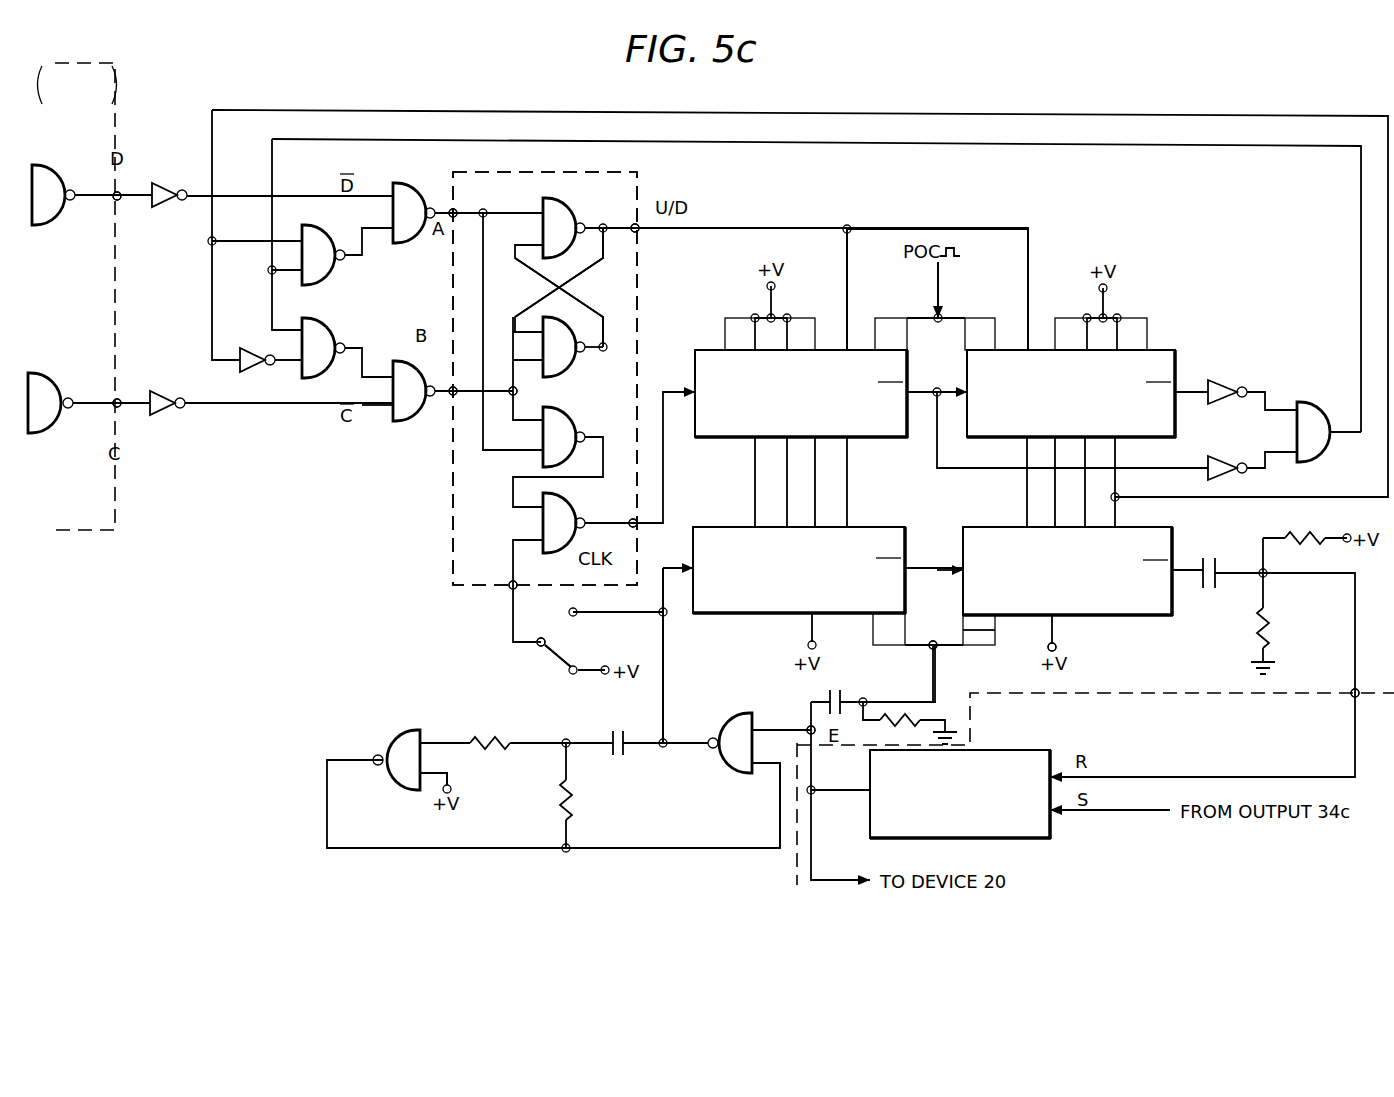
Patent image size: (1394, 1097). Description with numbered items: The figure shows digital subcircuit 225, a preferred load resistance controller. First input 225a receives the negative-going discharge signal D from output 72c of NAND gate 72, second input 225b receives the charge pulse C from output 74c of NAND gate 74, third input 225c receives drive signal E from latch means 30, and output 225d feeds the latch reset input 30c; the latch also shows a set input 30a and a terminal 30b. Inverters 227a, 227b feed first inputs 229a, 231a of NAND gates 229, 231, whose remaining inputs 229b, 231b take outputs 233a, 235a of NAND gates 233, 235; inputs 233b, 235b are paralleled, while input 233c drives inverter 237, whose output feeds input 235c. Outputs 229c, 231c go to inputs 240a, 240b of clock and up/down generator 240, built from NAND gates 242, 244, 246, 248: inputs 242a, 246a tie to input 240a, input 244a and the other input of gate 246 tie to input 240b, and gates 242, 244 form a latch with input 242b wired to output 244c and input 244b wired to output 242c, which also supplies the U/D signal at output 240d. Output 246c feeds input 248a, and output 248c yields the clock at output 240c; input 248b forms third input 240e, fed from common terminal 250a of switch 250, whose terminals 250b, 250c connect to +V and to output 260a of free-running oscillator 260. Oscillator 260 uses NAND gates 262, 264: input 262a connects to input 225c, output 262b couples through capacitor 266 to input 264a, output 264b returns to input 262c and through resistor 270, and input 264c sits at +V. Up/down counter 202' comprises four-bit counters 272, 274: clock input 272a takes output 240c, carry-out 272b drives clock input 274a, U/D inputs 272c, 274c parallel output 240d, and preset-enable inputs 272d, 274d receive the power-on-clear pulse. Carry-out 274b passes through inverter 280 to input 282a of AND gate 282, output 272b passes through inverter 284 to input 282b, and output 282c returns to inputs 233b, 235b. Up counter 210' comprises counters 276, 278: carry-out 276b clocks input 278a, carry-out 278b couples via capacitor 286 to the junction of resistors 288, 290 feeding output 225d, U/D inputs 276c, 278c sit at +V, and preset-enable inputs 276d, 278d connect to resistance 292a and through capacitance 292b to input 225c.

The NAND gate 72 is at (60, 175).
The output of NAND gate 72c is at (76, 205).
The NAND gate 74 is at (56, 375).
The output of NAND gate 74c is at (74, 415).
The digital subcircuit 225 is at (233, 553).
The first input 225a is at (120, 202).
The second input 225b is at (120, 415).
The third subcircuit input 225c is at (808, 726).
The subcircuit output 225d is at (1350, 690).
The first inverter means 227a is at (162, 180).
The second inverter means 227b is at (173, 405).
The two-input NAND gate 229 is at (458, 226).
The first input of NAND gate 229a is at (385, 185).
The remaining input of NAND gate 229b is at (372, 228).
The gate output 229c is at (428, 190).
The two-input NAND gate 231 is at (397, 362).
The first input of NAND gate 231a is at (378, 412).
The remaining input of NAND gate 231b is at (385, 378).
The gate output 231c is at (430, 402).
The NAND gate 233 is at (350, 217).
The gate output 233a is at (346, 262).
The first input of NAND gate 233b is at (275, 262).
The remaining input of NAND gate 233c is at (280, 240).
The NAND gate 235 is at (338, 325).
The gate output 235a is at (342, 332).
The first input of NAND gate 235b is at (280, 320).
The remaining input of NAND gate 235c is at (287, 363).
The third inverter means 237 is at (233, 360).
The clock and up/down logic generator 240 is at (645, 300).
The A input 240a is at (452, 200).
The second B input 240b is at (455, 420).
The generator circuit output 240c is at (640, 515).
The output terminal 240d is at (640, 232).
The third input 240e is at (505, 596).
The first NAND gate 242 is at (552, 194).
The first input of first gate 242a is at (512, 213).
The first gate second input 242b is at (565, 288).
The first gate output 242c is at (590, 228).
The second NAND gate 244 is at (543, 345).
The first input of second gate 244a is at (516, 393).
The second gate second input 244b is at (566, 290).
The second gate output 244c is at (585, 350).
The third NAND gate 246 is at (512, 408).
The gate input 246a is at (536, 449).
The third gate output 246c is at (598, 423).
The fourth NAND gate 248 is at (559, 523).
The first input of fourth gate 248a is at (523, 507).
The remaining fourth gate input 248b is at (523, 540).
The fourth gate output 248c is at (592, 520).
The single-pole double-throw switch means 250 is at (528, 662).
The common terminal 250a is at (550, 640).
The first contactable terminal 250b is at (577, 673).
The remaining contactable terminal 250c is at (574, 615).
The free-running oscillator means 260 is at (500, 755).
The oscillator output 260a is at (664, 668).
The first NAND gate of oscillator 262 is at (725, 715).
The first input of first gate 262a is at (732, 712).
The gate output 262b is at (712, 750).
The remaining input of first gate 262c is at (770, 765).
The second NAND gate of oscillator 264 is at (393, 728).
The first input of second gate 264a is at (435, 742).
The second gate output 264b is at (352, 760).
The remaining second gate input 264c is at (430, 785).
The series capacitor 266 is at (615, 758).
The resistor 270 is at (575, 815).
The lesser-significance up/down counter portion 272 is at (693, 351).
The clock CK input 272a is at (685, 400).
The carry-out output 272b is at (915, 400).
The up/down U/D input 272c is at (845, 340).
The preset enable input 272d is at (880, 318).
The greater-significance up/down counter portion 274 is at (1157, 350).
The clock CK input 274a is at (962, 400).
The carry-out output 274b is at (1185, 397).
The up/down U/D input 274c is at (1030, 290).
The preset enable input 274d is at (973, 318).
The up-counter first portion 276 is at (730, 527).
The carry-out output 276b is at (912, 565).
The up/down U/D input 276c is at (868, 650).
The preset enable PE input 276d is at (918, 644).
The up-counter second portion 278 is at (1000, 527).
The clock CK input 278a is at (960, 565).
The carry-out output 278b is at (1185, 570).
The up/down U/D input 278c is at (1058, 647).
The preset enable PE input 278d is at (968, 648).
The inverting means 280 is at (1222, 387).
The two-input AND gate 282 is at (1325, 400).
The first input of AND gate 282a is at (1287, 408).
The remaining input of AND gate 282b is at (1283, 455).
The gate output signal 282c is at (1340, 437).
The inverter means 284 is at (1208, 467).
The coupling capacitance 286 is at (1208, 590).
The series resistor 288 is at (1308, 542).
The series resistor 290 is at (1278, 617).
The resistance 292a is at (930, 713).
The capacitance 292b is at (845, 696).
The digital up/down counter means 202' is at (1258, 292).
The digital up counter means 210' is at (1251, 512).
The latch means 30 is at (868, 818).
The set input 30a is at (1065, 815).
The enable input 30b is at (865, 790).
The latch reset R input 30c is at (1058, 775).